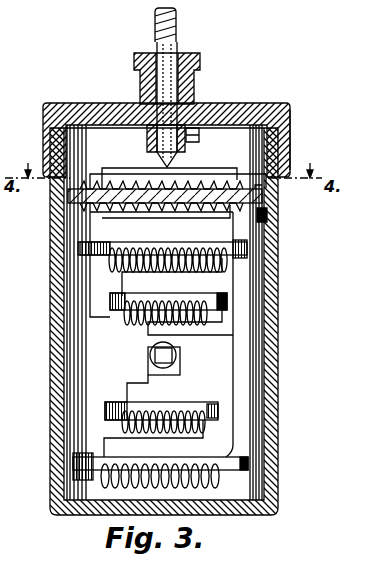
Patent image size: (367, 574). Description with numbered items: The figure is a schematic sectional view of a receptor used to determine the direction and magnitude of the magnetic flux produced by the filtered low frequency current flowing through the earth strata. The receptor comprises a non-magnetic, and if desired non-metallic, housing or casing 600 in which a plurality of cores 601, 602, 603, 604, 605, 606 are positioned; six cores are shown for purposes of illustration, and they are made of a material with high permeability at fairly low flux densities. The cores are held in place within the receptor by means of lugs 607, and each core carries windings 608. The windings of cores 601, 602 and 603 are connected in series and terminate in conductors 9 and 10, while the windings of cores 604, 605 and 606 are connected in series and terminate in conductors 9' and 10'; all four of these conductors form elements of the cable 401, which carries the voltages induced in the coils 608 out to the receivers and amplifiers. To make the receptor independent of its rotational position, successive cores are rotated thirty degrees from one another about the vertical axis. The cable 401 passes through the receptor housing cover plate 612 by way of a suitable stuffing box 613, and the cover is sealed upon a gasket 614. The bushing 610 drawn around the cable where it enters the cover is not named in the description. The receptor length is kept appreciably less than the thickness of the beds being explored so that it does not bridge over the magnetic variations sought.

The cable 401 is at (176, 25).
The insulating bushing 610 is at (178, 57).
The stuffing box 613 is at (200, 81).
The receptor housing cover plate 612 is at (243, 105).
The gasket 614 is at (290, 118).
The core 601 is at (262, 196).
The lugs 607 is at (272, 225).
The core 602 is at (228, 249).
The windings 608 is at (122, 258).
The core 603 is at (116, 310).
The core 604 is at (180, 354).
The core 605 is at (173, 414).
The core 606 is at (160, 476).
The housing or casing 600 is at (279, 414).
The conductor 9 is at (178, 169).
The conductor 10 is at (169, 167).
The conductor 9' is at (241, 334).
The conductor 10' is at (190, 323).